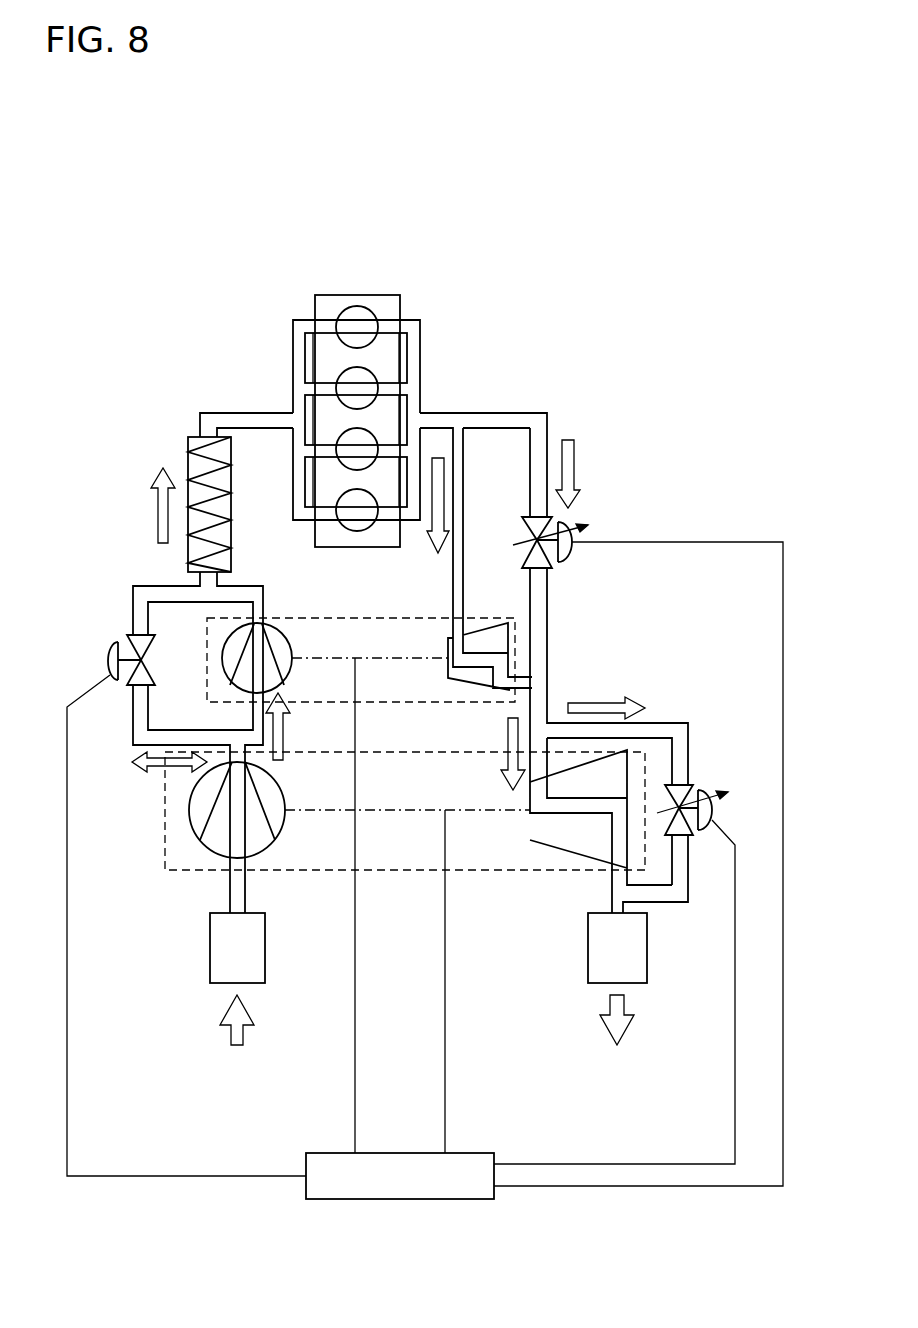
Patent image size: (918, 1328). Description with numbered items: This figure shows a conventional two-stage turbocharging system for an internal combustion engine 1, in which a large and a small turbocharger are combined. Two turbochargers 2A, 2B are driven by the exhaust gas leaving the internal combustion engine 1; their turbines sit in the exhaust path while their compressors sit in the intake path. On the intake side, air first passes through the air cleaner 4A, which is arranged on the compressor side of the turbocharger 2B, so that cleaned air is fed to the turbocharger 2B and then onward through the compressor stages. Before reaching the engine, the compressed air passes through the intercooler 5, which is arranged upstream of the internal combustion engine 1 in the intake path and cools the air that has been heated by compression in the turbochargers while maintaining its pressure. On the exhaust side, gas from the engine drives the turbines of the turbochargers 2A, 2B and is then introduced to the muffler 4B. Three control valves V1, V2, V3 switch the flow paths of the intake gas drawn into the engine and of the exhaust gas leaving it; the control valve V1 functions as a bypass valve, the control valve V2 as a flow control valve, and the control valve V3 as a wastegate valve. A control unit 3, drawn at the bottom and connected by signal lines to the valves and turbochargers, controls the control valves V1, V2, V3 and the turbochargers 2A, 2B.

The internal combustion engine 1 is at (361, 293).
The intercooler 5 is at (188, 440).
The control valve V1 is at (118, 640).
The control valve V2 is at (572, 522).
The control valve V3 is at (714, 790).
The turbocharger 2A is at (515, 656).
The turbocharger 2B is at (507, 872).
The air cleaner 4A is at (210, 948).
The muffler 4B is at (647, 948).
The control unit 3 is at (450, 1200).